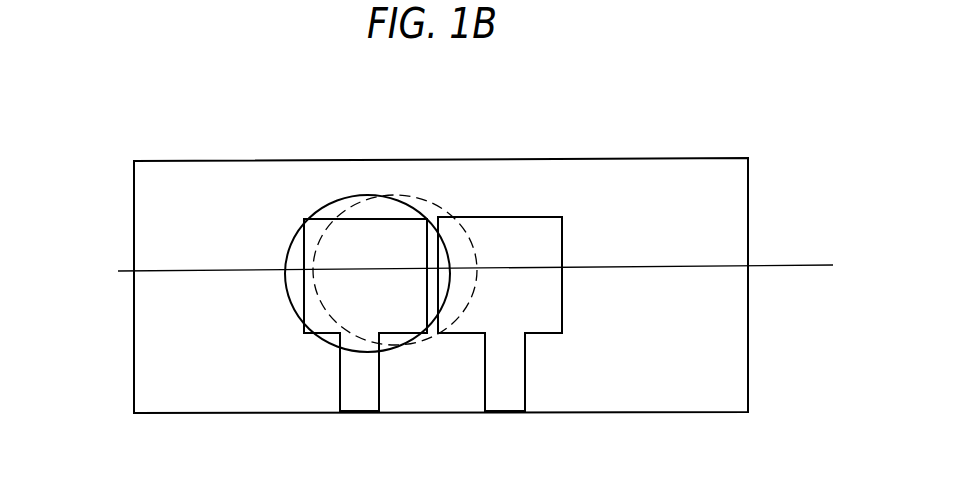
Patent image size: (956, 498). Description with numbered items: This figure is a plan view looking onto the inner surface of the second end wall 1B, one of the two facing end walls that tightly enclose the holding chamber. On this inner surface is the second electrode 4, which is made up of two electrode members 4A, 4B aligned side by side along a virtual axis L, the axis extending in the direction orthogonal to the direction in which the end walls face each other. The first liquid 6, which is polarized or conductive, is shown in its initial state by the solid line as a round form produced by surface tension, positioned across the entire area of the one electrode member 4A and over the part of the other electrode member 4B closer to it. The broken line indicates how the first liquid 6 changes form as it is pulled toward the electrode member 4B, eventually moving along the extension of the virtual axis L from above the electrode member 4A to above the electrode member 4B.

The second end wall 1B is at (722, 112).
The second electrode 4 is at (472, 143).
The electrode member 4A is at (370, 212).
The electrode member 4B is at (517, 217).
The first liquid 6 is at (296, 258).
The virtual axis L is at (817, 264).